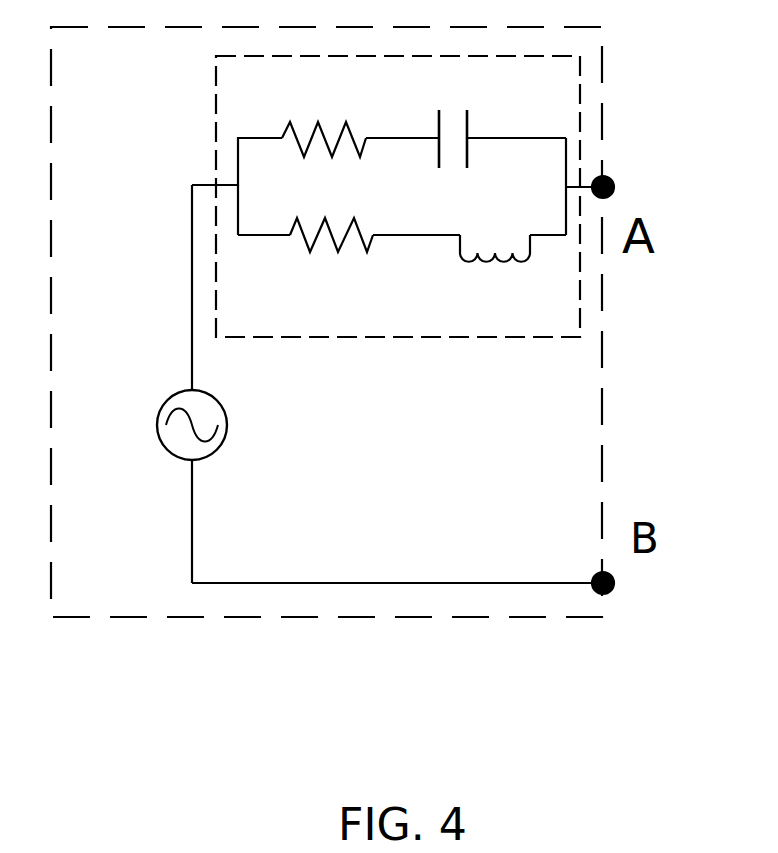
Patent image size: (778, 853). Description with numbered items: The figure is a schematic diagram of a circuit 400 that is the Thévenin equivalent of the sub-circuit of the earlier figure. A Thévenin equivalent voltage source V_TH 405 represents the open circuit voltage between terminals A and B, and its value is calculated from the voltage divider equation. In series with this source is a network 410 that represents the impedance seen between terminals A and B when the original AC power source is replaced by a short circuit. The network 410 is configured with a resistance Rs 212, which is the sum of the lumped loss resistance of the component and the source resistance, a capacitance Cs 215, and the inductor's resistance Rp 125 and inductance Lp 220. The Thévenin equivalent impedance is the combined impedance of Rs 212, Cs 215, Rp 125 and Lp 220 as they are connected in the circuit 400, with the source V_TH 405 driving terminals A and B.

The circuit 400 is at (620, 338).
The network 410 is at (408, 350).
The resistance Rs 212 is at (317, 116).
The capacitance Cs 215 is at (425, 127).
The resistance Rp 125 is at (343, 217).
The inductance Lp 220 is at (497, 242).
The Thévenin equivalent voltage source V_TH 405 is at (157, 398).